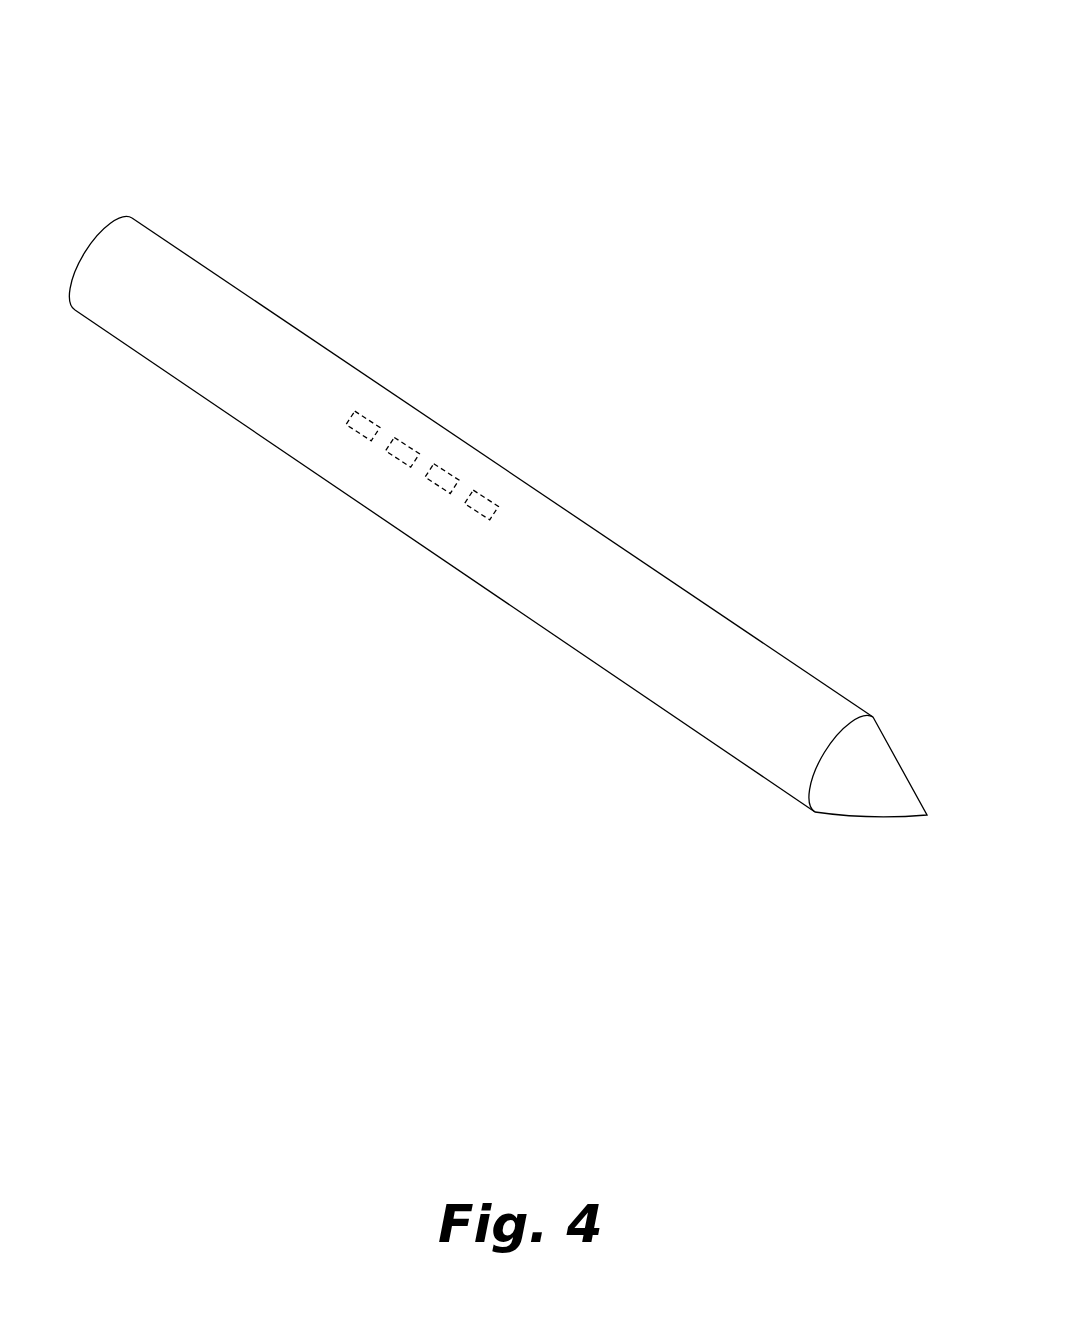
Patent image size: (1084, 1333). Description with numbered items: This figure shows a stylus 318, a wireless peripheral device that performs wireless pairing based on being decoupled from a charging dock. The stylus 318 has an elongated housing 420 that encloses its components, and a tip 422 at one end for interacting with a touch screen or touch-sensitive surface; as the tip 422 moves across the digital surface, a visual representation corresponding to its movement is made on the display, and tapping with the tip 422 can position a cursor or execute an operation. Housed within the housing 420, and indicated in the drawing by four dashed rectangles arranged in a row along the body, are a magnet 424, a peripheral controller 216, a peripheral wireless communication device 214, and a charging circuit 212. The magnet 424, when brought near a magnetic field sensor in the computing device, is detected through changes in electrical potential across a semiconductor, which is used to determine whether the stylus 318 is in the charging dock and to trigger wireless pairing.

The stylus 318 is at (557, 105).
The housing 420 is at (645, 577).
The tip 422 is at (832, 795).
The magnet 424 is at (358, 432).
The peripheral controller 216 is at (415, 452).
The peripheral wireless communication device 214 is at (437, 485).
The charging circuit 212 is at (498, 500).